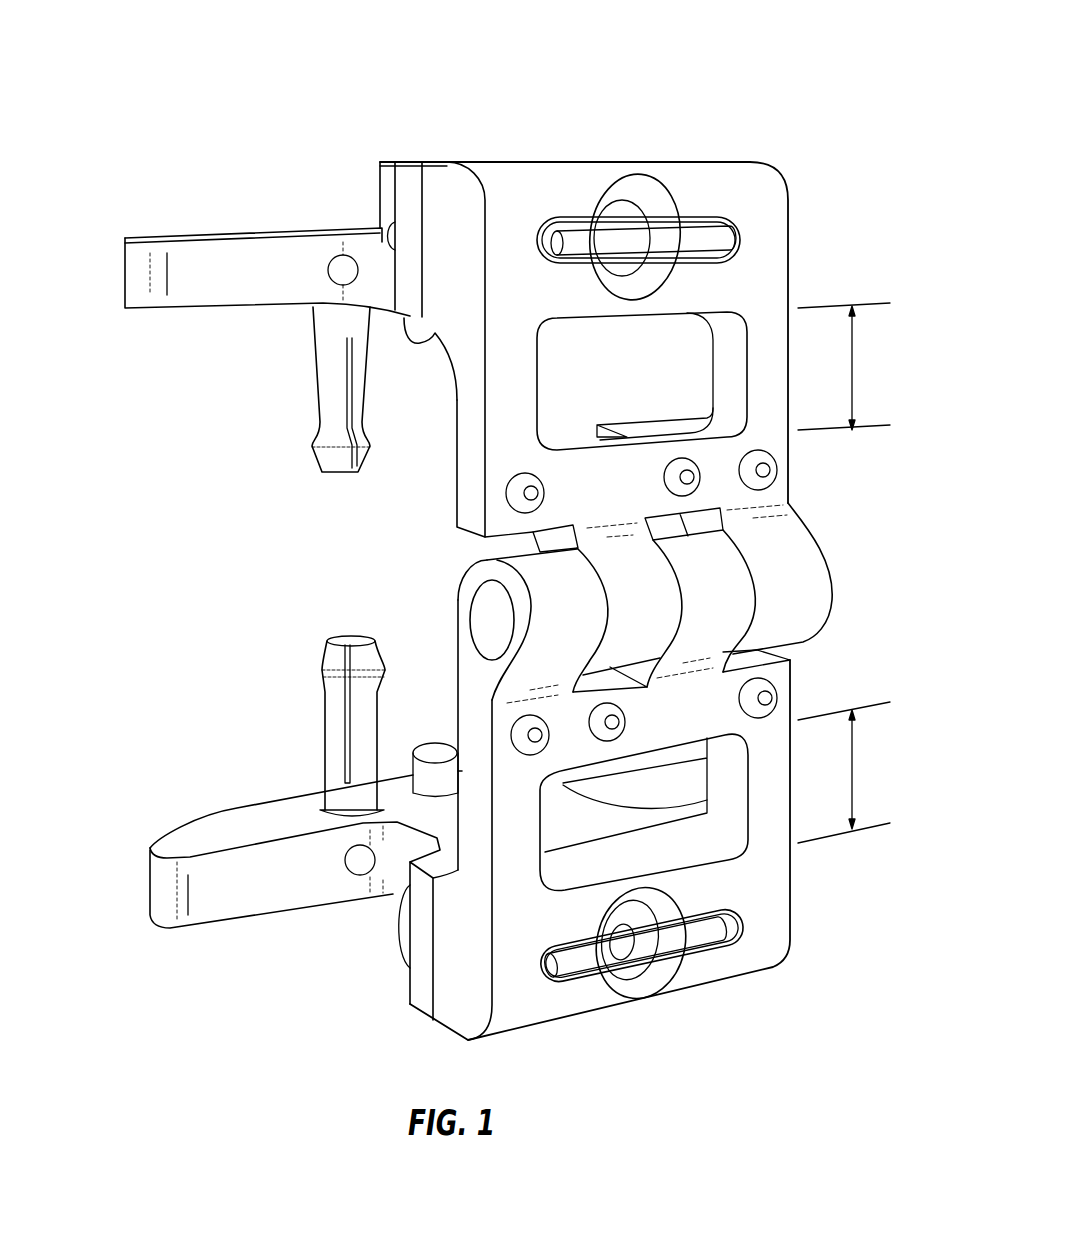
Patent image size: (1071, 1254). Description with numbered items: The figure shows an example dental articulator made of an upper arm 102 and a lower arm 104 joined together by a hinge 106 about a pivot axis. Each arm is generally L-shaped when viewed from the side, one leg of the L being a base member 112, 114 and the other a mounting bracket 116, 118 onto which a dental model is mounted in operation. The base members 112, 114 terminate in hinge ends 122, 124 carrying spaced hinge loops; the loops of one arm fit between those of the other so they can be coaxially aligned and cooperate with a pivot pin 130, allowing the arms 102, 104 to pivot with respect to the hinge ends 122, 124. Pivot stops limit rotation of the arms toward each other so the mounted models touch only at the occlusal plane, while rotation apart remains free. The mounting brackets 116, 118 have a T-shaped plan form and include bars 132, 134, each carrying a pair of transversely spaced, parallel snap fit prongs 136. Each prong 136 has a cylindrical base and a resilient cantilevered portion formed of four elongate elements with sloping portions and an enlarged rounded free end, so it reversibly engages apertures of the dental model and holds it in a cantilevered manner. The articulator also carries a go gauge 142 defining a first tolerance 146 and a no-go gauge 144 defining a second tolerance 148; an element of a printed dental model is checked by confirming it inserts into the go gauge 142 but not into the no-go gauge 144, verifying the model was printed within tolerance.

The upper arm 102 is at (633, 140).
The lower arm 104 is at (706, 1000).
The hinge 106 is at (460, 573).
The base member 112 is at (767, 190).
The base member 114 is at (763, 942).
The mounting bracket 116 is at (385, 178).
The mounting bracket 118 is at (420, 915).
The hinge end 122 is at (793, 565).
The hinge end 124 is at (737, 607).
The pivot pin 130 is at (483, 625).
The bar 132 is at (180, 237).
The bar 134 is at (157, 880).
The snap fit prong 136 is at (312, 447).
The go gauge 142 is at (727, 357).
The no-go gauge 144 is at (727, 782).
The first tolerance 146 is at (844, 366).
The second tolerance 148 is at (844, 772).